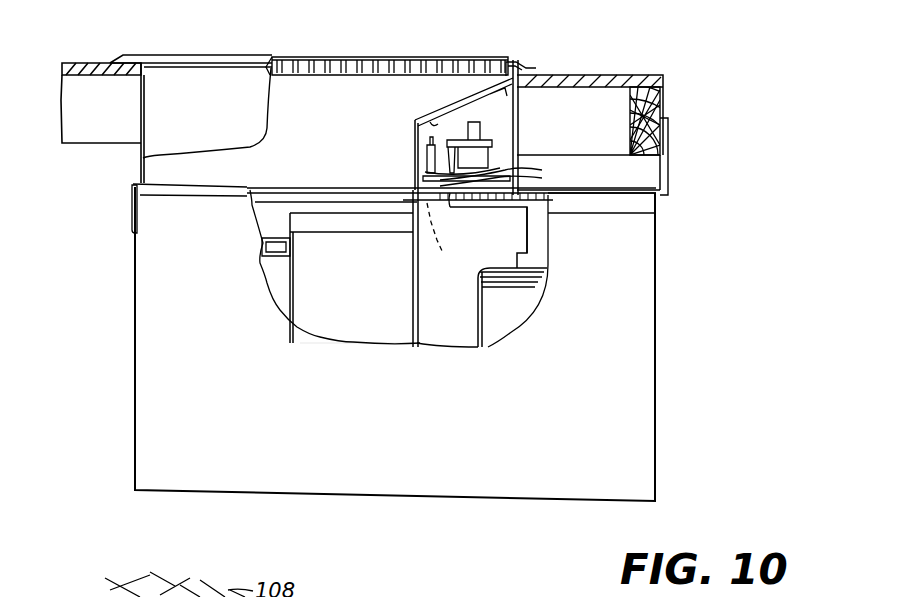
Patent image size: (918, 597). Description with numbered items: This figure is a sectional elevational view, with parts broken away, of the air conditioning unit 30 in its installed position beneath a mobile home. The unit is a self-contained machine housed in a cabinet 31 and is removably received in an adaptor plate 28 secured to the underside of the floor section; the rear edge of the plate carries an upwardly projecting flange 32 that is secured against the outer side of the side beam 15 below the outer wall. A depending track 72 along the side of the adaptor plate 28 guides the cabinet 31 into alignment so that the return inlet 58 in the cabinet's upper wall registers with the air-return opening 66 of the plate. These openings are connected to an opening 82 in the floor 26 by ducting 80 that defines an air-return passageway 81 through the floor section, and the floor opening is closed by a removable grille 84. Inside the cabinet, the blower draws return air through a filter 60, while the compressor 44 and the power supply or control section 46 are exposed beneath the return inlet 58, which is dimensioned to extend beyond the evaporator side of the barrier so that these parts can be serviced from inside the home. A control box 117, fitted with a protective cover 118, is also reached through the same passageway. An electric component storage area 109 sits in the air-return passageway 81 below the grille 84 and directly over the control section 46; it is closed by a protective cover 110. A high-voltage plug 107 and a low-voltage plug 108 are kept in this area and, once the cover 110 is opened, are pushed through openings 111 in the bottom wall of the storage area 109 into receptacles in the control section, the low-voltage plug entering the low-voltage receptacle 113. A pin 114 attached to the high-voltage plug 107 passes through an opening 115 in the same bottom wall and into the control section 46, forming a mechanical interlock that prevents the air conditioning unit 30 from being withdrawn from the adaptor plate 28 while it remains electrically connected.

The side beam 15 is at (660, 101).
The floor 26 is at (612, 75).
The adaptor plate 28 is at (190, 204).
The air conditioning unit 30 is at (482, 439).
The cabinet 31 is at (635, 432).
The upwardly projecting flange 32 is at (668, 156).
The compressor 44 is at (525, 298).
The control section 46 is at (517, 228).
The return inlet 58 is at (272, 199).
The filter 60 is at (272, 262).
The air-return opening 66 is at (284, 187).
The track 72 is at (626, 206).
The ducting 80 is at (146, 167).
The air-return passageway 81 is at (350, 118).
The opening in the floor 82 is at (170, 64).
The grille 84 is at (522, 65).
The high-voltage plug 107 is at (492, 160).
The low-voltage plug 108 is at (428, 150).
The storage area 109 is at (500, 112).
The protective cover 110 is at (452, 110).
The openings 111 is at (512, 172).
The low-voltage receptacle 113 is at (445, 268).
The pin 114 is at (426, 177).
The opening 115 is at (452, 200).
The control box 117 is at (380, 329).
The protective cover 118 is at (388, 233).